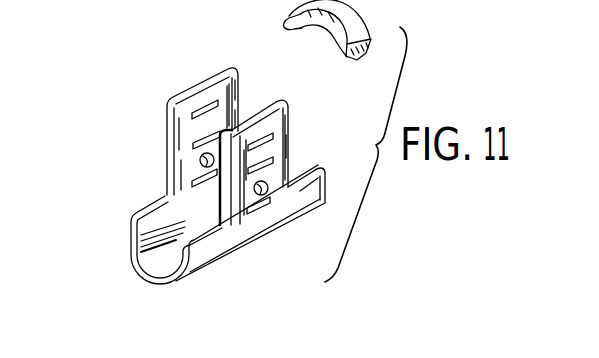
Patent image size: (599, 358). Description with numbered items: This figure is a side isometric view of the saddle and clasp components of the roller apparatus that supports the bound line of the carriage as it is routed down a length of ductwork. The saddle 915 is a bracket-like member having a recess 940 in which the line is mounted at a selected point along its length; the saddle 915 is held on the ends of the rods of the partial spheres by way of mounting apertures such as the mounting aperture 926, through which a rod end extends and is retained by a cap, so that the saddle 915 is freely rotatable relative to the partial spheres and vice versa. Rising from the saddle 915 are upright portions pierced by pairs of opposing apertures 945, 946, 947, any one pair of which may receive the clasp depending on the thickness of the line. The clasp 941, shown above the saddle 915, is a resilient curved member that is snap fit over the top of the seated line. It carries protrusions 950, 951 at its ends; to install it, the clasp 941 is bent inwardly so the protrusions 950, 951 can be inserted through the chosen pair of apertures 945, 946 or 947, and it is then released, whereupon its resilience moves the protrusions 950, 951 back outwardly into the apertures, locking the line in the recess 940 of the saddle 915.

The saddle 915 is at (128, 108).
The recess 940 is at (160, 262).
The aperture 945 is at (226, 129).
The aperture 946 is at (288, 145).
The mounting aperture 926 is at (200, 160).
The aperture 947 is at (257, 213).
The clasp 941 is at (358, 5).
The protrusion 951 is at (282, 26).
The protrusion 950 is at (361, 59).